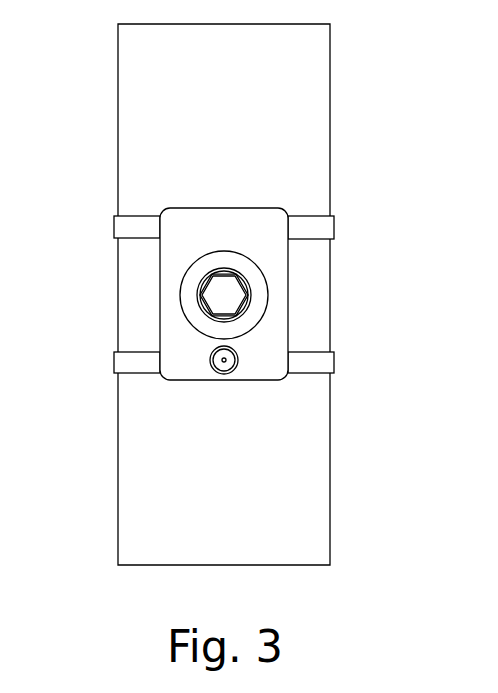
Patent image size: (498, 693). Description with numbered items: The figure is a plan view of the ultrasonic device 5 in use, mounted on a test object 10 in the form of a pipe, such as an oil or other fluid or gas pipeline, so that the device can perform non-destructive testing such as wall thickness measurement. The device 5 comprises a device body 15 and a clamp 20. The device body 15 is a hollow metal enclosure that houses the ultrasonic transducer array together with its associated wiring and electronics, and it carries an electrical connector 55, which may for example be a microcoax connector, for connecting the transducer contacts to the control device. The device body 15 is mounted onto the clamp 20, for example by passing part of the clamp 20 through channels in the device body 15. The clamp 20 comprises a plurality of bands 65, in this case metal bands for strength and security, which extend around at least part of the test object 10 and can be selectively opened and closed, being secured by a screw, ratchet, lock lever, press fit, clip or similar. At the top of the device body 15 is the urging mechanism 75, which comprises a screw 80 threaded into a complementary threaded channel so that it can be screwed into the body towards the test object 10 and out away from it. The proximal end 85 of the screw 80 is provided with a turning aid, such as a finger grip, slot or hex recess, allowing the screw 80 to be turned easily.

The ultrasonic device 5 is at (308, 325).
The test object 10 is at (317, 106).
The device body 15 is at (245, 220).
The clamp 20 is at (322, 229).
The electrical connector 55 is at (226, 366).
The bands 65 is at (123, 228).
The urging mechanism 75 is at (260, 284).
The screw 80 is at (200, 283).
The proximal end 85 is at (215, 297).